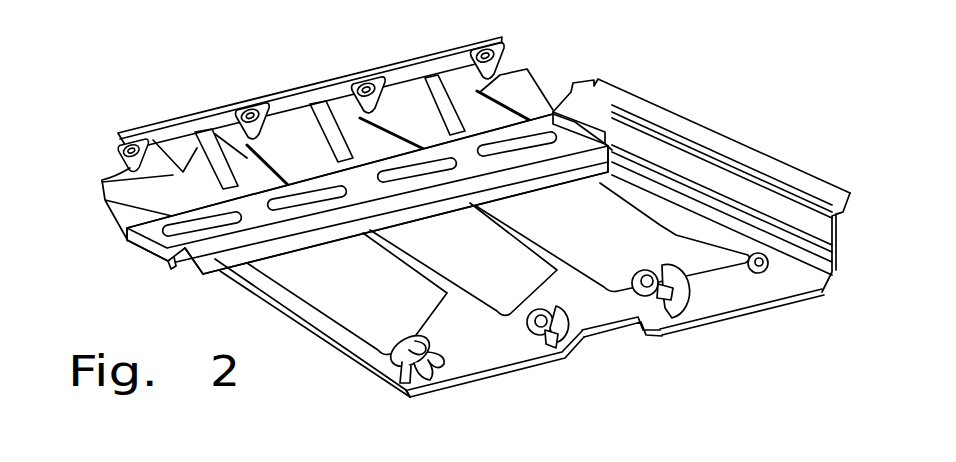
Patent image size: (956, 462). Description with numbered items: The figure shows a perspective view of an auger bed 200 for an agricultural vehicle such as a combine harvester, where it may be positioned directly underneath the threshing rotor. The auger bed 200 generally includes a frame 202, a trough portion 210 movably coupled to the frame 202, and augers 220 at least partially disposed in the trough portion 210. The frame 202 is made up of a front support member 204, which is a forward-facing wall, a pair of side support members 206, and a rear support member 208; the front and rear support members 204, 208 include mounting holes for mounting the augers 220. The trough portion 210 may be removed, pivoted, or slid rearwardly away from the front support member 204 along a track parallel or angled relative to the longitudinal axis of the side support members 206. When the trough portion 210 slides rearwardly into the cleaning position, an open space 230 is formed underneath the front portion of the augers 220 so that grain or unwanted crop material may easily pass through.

The auger bed 200 is at (705, 86).
The frame 202 is at (780, 204).
The front support member 204 is at (510, 350).
The side support members 206 is at (257, 287).
The rear support member 208 is at (430, 60).
The trough portion 210 is at (355, 318).
The augers 220 is at (757, 272).
The open space 230 is at (466, 336).